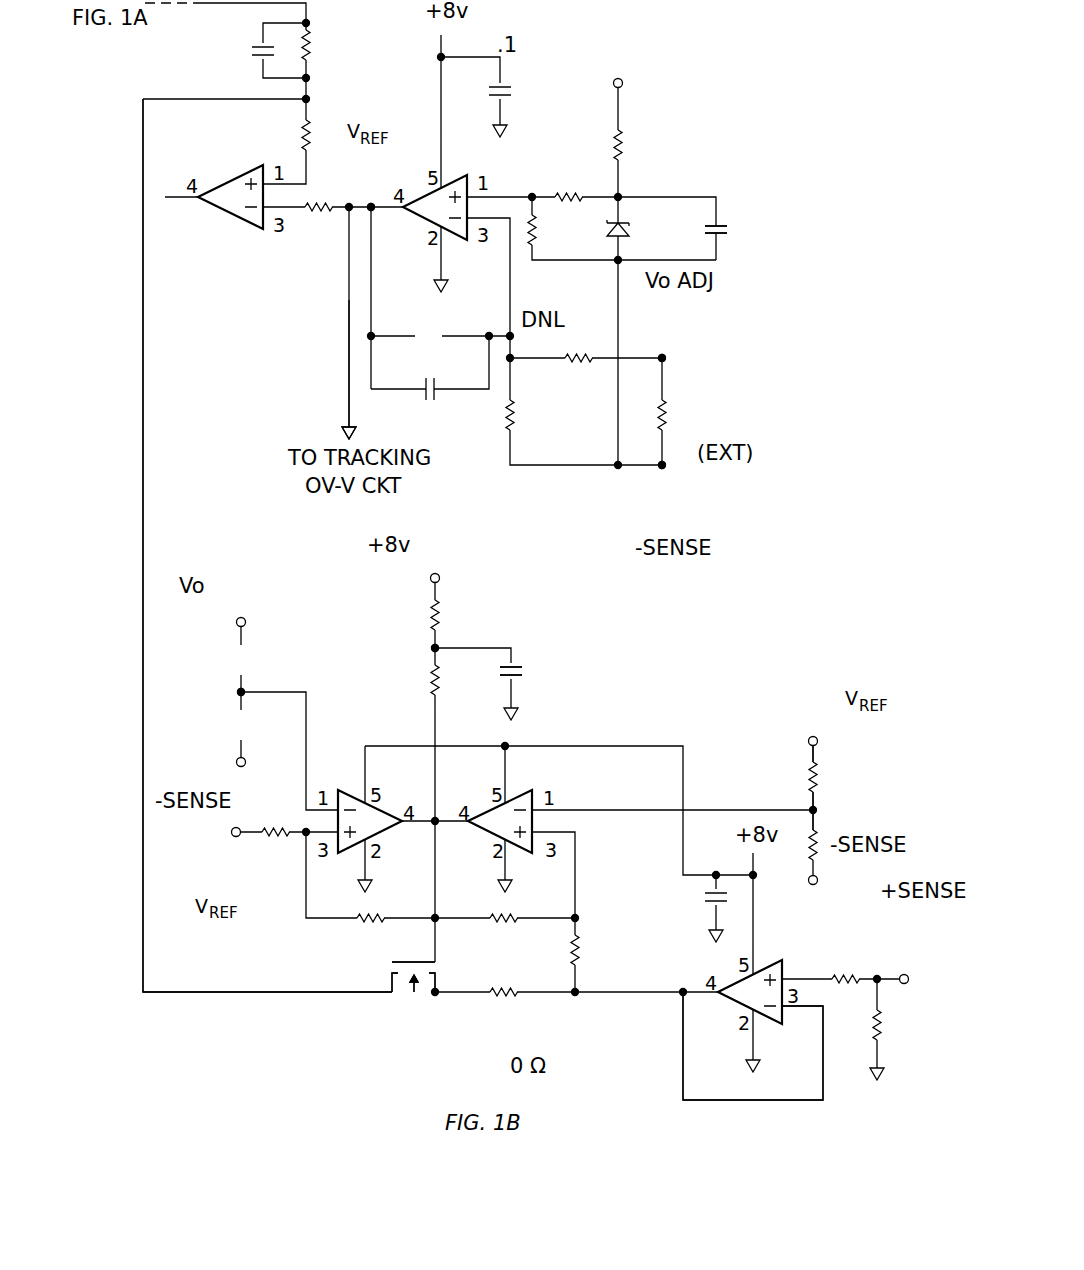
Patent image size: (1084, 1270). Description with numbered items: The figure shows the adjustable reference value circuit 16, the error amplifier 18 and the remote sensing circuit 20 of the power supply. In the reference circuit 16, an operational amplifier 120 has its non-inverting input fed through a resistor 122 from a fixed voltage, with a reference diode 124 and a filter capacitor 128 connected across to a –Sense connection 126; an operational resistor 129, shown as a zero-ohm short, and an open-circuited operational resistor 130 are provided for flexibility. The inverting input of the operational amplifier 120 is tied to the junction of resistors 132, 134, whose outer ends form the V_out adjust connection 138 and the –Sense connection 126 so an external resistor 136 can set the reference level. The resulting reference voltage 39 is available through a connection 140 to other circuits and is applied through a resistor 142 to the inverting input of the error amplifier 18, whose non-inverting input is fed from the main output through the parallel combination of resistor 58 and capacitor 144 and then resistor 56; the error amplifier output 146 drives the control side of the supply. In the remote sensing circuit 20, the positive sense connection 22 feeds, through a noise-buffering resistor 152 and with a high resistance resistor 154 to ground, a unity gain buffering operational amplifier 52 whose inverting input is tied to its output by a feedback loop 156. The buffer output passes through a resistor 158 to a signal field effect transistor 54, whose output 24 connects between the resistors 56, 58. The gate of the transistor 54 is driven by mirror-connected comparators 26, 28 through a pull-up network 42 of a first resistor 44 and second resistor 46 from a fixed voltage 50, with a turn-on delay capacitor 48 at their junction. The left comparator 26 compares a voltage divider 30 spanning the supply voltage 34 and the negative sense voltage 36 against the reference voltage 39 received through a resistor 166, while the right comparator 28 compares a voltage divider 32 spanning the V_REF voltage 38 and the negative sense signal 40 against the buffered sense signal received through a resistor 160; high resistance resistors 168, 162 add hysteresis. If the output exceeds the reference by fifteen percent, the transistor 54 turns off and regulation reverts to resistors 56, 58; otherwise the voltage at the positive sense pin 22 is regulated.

The capacitor 144 is at (253, 52).
The feedback resistor 58 is at (310, 45).
The feedback resistor 56 is at (300, 136).
The reference voltage 39 is at (371, 205).
The output of the error amplifier 146 is at (187, 200).
The error amplifier 18 is at (238, 218).
The resistor 142 is at (316, 213).
The operational amplifier 120 is at (421, 215).
The adjustable reference value circuit 16 is at (672, 70).
The resistor 122 is at (624, 137).
The zero ohm resistor 129 is at (573, 191).
The reference diode 124 is at (628, 226).
The filter capacitor 128 is at (727, 228).
The operational resistor 130 is at (538, 230).
The resistor 134 is at (578, 351).
The V_out adjust connection 138 is at (663, 353).
The resistor 132 is at (517, 415).
The external resistor 136 is at (669, 418).
The –Sense connection 126 is at (662, 470).
The connection 140 is at (347, 393).
The fixed voltage 50 is at (430, 579).
The first resistor 44 is at (443, 620).
The pull-up network 42 is at (430, 650).
The second resistor 46 is at (430, 685).
The turn-on delay capacitor 48 is at (528, 672).
The supply voltage 34 is at (236, 620).
The voltage divider 30 is at (238, 693).
The negative sense voltage 36 is at (237, 763).
The left comparator 26 is at (385, 810).
The right comparator 28 is at (480, 810).
The V_REF voltage 38 is at (818, 741).
The voltage divider 32 is at (808, 805).
The remote sensing circuit 20 is at (886, 790).
The negative sense signal 40 is at (818, 879).
The resistor 166 is at (279, 838).
The high resistance resistor 168 is at (381, 915).
The high resistance resistor 162 is at (505, 925).
The resistor 160 is at (580, 956).
The resistor 158 is at (512, 995).
The signal field effect transistor 54 is at (390, 983).
The output 24 is at (143, 950).
The buffering operational amplifier 52 is at (783, 970).
The resistor 152 is at (850, 975).
The positive sense connection 22 is at (905, 970).
The high resistance resistor 154 is at (883, 1028).
The feedback loop 156 is at (683, 1046).